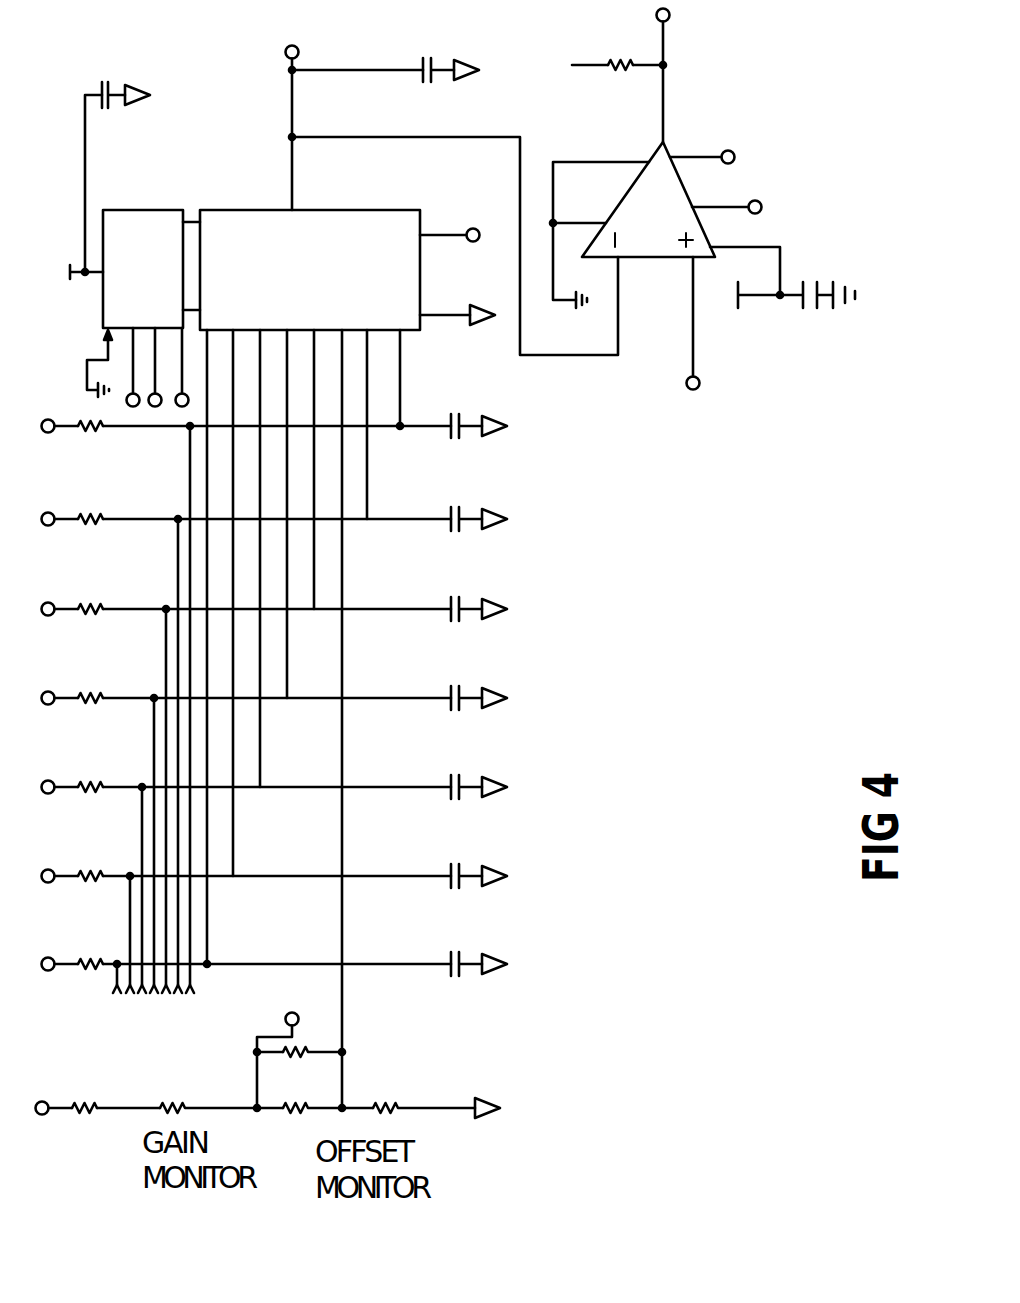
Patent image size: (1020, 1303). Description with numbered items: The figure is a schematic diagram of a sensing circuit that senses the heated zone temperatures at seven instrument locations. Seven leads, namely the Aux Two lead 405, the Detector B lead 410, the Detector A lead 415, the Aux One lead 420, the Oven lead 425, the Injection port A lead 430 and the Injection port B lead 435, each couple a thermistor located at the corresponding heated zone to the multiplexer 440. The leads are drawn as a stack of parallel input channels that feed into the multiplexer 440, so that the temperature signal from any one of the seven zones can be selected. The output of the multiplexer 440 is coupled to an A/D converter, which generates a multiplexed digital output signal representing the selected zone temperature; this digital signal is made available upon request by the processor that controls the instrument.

The Aux2 lead 405 is at (110, 967).
The Detector B lead 410 is at (120, 880).
The Detector A lead 415 is at (128, 791).
The Aux 1 lead 420 is at (125, 700).
The Oven lead 425 is at (128, 613).
The Injection port A lead 430 is at (128, 522).
The Injection port B lead 435 is at (131, 428).
The multiplexer 440 is at (103, 286).